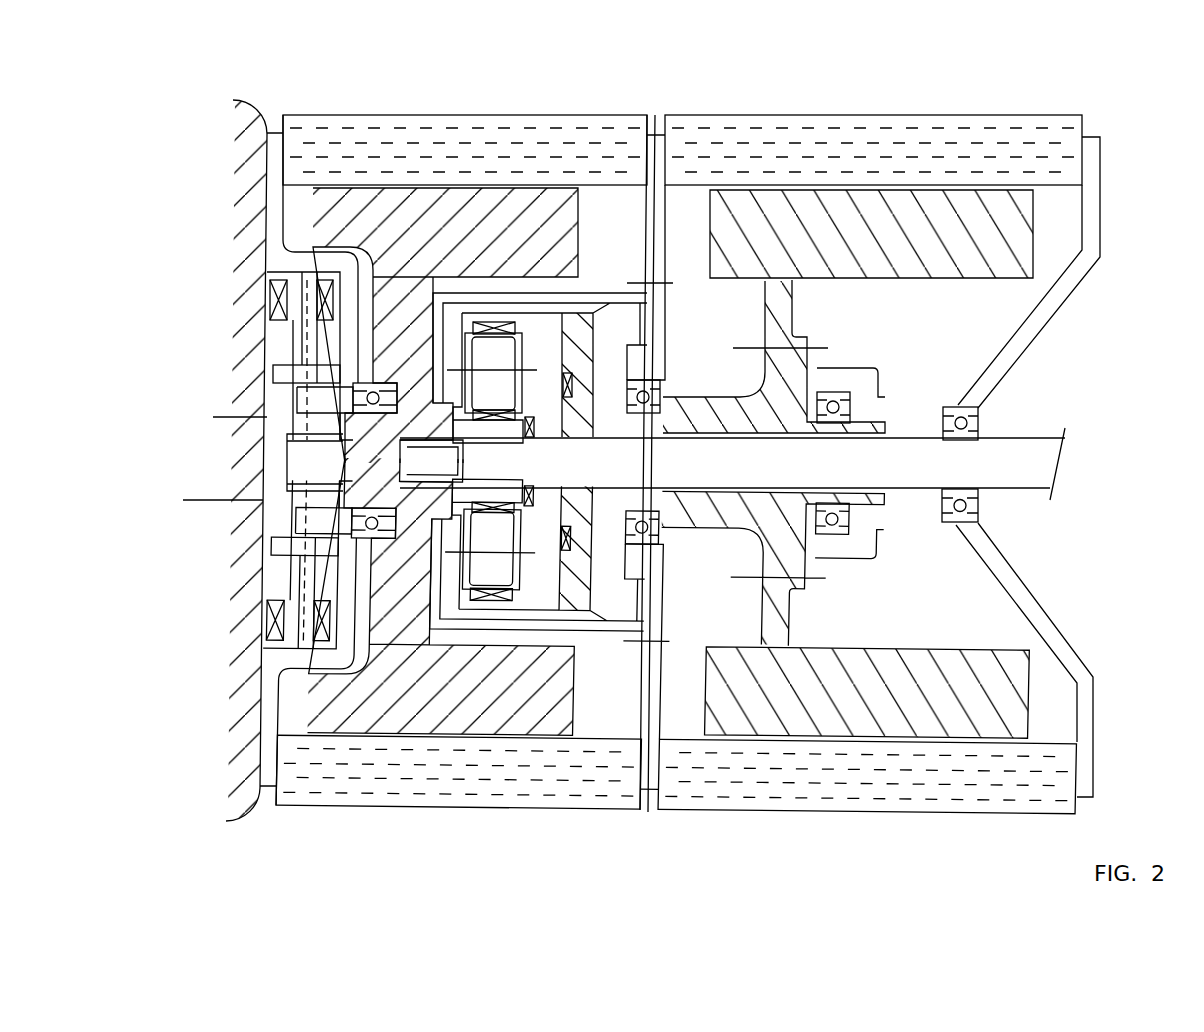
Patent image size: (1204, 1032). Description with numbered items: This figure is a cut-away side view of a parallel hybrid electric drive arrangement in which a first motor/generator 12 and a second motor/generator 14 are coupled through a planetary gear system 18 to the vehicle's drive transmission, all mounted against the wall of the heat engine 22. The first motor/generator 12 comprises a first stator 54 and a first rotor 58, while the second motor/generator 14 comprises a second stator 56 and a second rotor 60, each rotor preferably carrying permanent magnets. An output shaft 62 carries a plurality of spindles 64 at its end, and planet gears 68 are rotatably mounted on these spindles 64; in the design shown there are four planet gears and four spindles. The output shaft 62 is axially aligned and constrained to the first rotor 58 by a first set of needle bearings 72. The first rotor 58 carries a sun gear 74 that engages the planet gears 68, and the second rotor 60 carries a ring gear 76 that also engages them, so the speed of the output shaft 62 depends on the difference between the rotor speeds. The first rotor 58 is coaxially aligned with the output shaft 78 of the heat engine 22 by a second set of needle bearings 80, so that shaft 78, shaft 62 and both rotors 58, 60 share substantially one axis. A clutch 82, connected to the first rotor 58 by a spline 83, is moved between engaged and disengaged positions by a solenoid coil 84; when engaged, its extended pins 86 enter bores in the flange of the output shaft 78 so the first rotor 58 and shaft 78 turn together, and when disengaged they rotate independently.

The first motor/generator 12 is at (647, 68).
The second motor/generator 14 is at (1083, 70).
The planetary gear system 18 is at (413, 593).
The heat engine 22 is at (243, 142).
The first stator 54 is at (470, 140).
The second stator 56 is at (730, 147).
The first rotor 58 is at (470, 223).
The second rotor 60 is at (822, 228).
The output shaft 62 is at (998, 457).
The spindles 64 is at (458, 352).
The planet gears 68 is at (493, 385).
The first set of needle bearings 72 is at (497, 433).
The sun gear 74 is at (473, 417).
The ring gear 76 is at (497, 335).
The output shaft of heat engine 78 is at (225, 430).
The second set of needle bearings 80 is at (302, 437).
The clutch 82 is at (290, 605).
The spline 83 is at (300, 508).
The solenoid coil 84 is at (267, 647).
The extended pins 86 is at (278, 547).